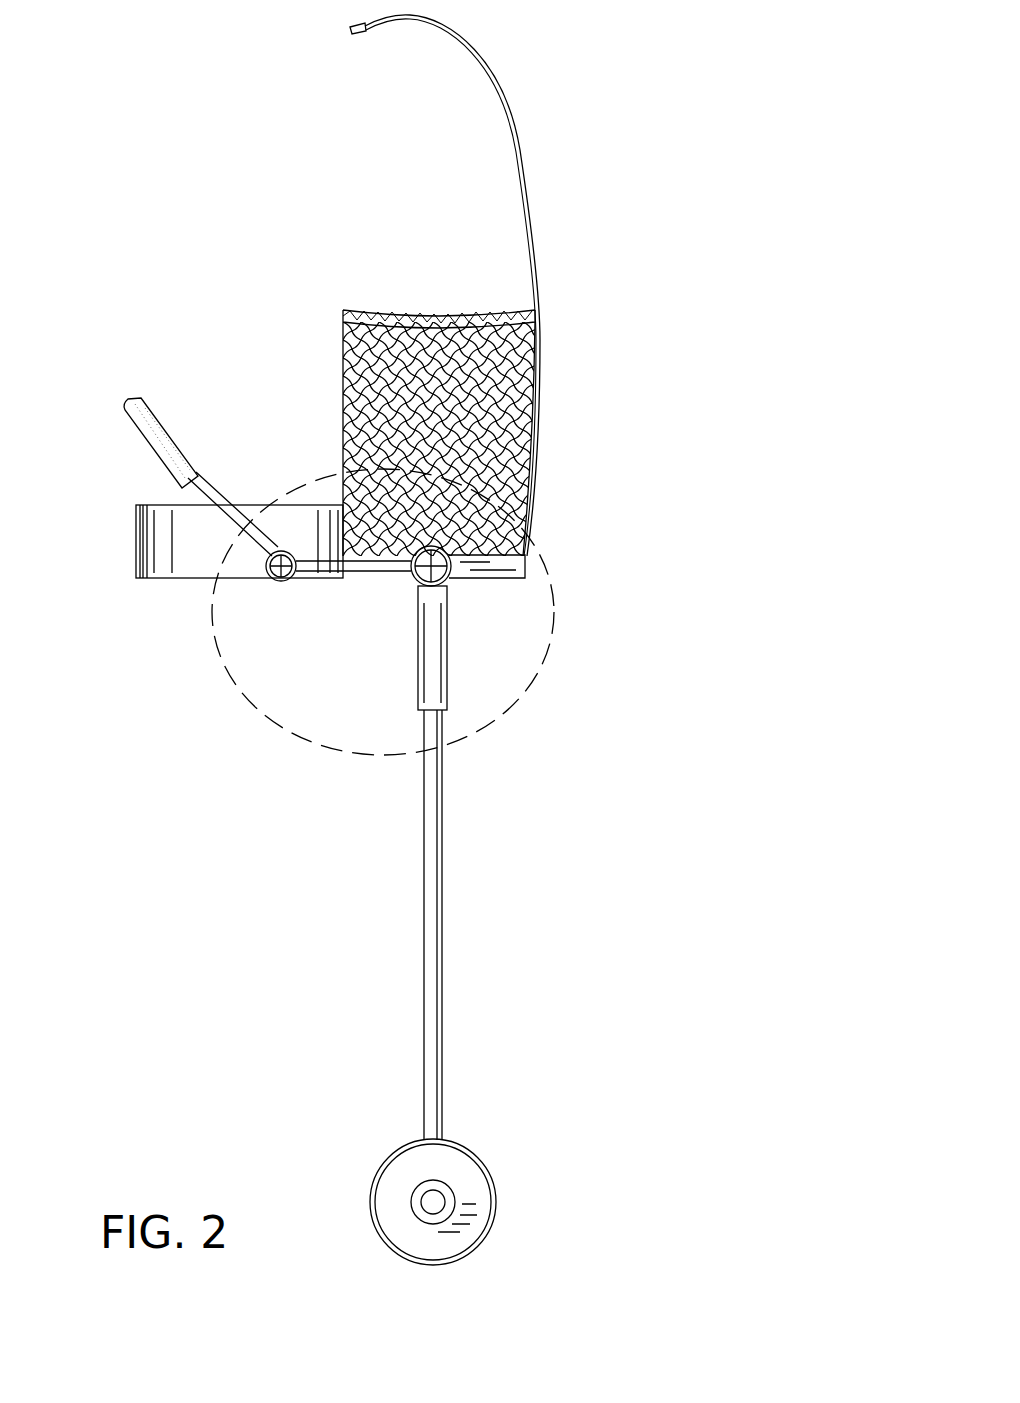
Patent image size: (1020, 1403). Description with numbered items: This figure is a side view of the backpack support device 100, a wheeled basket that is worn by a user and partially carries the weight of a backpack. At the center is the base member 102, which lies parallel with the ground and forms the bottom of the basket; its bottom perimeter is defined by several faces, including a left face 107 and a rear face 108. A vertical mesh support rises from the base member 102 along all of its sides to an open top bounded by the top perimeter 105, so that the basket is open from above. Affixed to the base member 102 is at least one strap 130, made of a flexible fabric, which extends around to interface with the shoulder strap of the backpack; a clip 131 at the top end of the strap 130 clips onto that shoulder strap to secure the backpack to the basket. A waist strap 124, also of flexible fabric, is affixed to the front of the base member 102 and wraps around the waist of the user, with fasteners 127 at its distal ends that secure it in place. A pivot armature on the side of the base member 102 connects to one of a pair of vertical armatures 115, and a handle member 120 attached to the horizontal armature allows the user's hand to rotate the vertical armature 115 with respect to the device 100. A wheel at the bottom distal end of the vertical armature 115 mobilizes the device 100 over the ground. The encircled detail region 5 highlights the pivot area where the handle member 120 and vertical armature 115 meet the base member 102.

The backpack support device 100 is at (633, 92).
The strap 130 is at (528, 218).
The clip 131 is at (352, 33).
The top perimeter 105 is at (432, 323).
The waist strap 124 is at (190, 562).
The handle member 120 is at (175, 442).
The left face 107 is at (502, 572).
The rear face 108 is at (525, 565).
The base member 102 is at (487, 580).
The detail region 5 is at (555, 590).
The vertical armature 115 is at (443, 920).
The fasteners 127 is at (495, 1218).